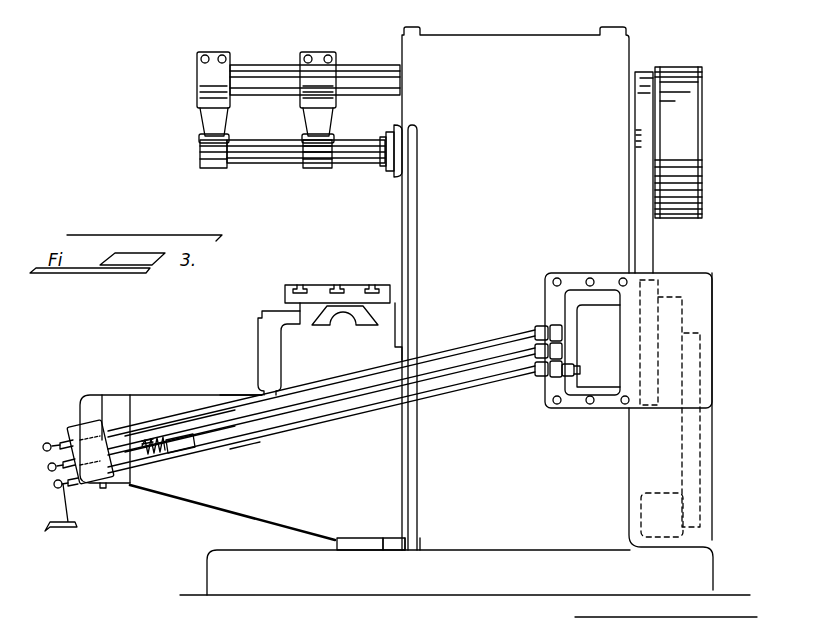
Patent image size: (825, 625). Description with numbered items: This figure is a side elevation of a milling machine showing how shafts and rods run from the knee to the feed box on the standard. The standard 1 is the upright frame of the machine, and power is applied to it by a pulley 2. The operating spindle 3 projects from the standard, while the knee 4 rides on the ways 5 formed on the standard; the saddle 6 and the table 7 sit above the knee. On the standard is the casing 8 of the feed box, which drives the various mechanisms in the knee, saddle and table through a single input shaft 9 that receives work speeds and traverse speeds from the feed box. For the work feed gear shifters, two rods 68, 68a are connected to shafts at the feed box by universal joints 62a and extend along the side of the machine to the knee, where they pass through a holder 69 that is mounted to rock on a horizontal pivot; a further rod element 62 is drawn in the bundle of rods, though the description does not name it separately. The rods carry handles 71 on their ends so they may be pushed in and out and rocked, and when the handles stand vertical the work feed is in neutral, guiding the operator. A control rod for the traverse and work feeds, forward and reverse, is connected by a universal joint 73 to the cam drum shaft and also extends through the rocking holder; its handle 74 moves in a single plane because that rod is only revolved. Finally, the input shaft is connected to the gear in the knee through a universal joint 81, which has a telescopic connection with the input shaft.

The standard 1 is at (598, 82).
The pulley 2 is at (680, 135).
The operating spindle 3 is at (358, 157).
The knee 4 is at (215, 485).
The ways for the knee 5 is at (410, 338).
The saddle 6 is at (293, 358).
The table 7 is at (320, 292).
The feed box casing 8 is at (582, 300).
The input shaft 9 is at (493, 372).
The rod 62 is at (238, 442).
The universal joints 62a is at (540, 328).
The rod 68 is at (172, 417).
The rod 68a is at (202, 430).
The holder 69 is at (90, 483).
The handles 71 is at (55, 441).
The universal joint 73 is at (556, 380).
The handle 74 is at (62, 528).
The universal joint 81 is at (152, 458).